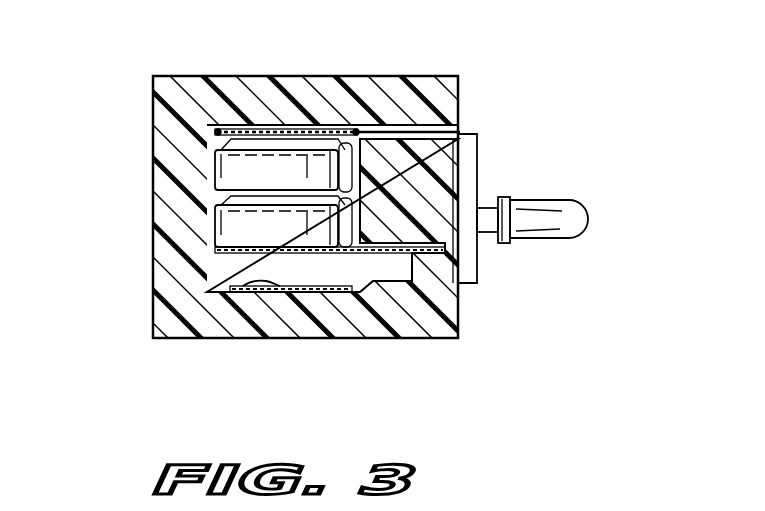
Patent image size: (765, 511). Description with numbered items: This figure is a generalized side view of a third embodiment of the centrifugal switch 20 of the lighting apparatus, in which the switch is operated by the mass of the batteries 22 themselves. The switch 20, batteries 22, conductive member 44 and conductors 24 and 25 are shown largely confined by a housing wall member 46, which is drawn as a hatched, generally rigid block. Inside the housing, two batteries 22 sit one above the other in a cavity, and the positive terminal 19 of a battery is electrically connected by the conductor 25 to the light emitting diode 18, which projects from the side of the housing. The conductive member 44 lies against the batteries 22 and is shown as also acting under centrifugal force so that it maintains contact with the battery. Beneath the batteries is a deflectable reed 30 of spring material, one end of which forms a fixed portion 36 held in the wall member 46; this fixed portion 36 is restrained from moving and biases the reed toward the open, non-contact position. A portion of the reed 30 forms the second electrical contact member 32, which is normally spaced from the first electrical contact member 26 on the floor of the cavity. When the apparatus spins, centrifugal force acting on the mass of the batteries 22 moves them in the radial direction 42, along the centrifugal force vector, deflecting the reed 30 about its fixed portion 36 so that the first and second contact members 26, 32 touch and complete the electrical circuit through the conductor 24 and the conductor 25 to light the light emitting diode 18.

The light emitting diode 18 is at (573, 207).
The positive terminal 19 is at (223, 125).
The centrifugal switch 20 is at (432, 366).
The batteries 22 is at (220, 209).
The electrical conductor 24 is at (480, 258).
The electrical conductor 25 is at (478, 134).
The first electrical contact member 26 is at (262, 288).
The deflectable reed 30 is at (355, 255).
The second electrical contact member 32 is at (242, 294).
The fixed portion of reed 36 is at (418, 284).
The radial direction 42 is at (231, 281).
The conductive member 44 is at (287, 129).
The housing wall member 46 is at (153, 322).